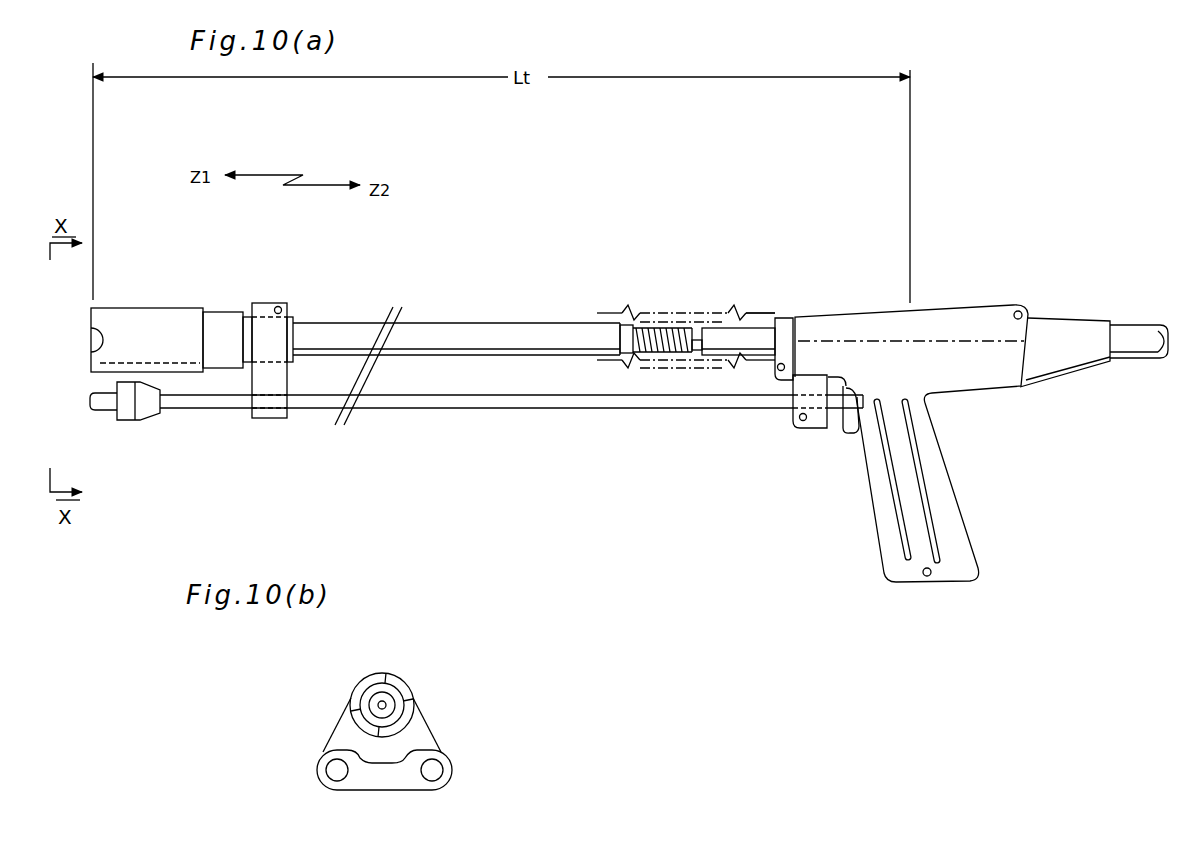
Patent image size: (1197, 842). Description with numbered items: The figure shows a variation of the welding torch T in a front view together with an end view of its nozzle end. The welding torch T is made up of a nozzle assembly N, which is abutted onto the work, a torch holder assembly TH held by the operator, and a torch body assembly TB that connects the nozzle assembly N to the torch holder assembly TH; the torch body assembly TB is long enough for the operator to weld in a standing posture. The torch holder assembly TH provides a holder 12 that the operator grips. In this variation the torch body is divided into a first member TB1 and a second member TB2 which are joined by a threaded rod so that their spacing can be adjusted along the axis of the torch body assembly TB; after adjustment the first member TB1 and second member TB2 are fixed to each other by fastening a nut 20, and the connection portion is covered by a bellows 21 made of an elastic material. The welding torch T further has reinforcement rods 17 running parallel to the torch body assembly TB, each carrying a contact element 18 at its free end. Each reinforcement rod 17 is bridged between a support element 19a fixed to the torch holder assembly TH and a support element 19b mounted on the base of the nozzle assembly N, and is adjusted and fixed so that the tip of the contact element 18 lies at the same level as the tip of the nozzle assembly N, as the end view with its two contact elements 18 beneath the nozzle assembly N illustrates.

In FIG. 10A, the holder 12 is at (940, 507).
In FIG. 10A, the reinforcement rod 17 is at (500, 405).
In FIG. 10A, the contact element 18 is at (105, 411).
In FIG. 10B, the contact element 18 is at (333, 768).
In FIG. 10A, the support element 19a is at (818, 423).
In FIG. 10A, the support element 19b is at (278, 378).
In FIG. 10A, the nut 20 is at (628, 345).
In FIG. 10A, the bellows 21 is at (751, 310).
In FIG. 10A, the nozzle assembly N is at (228, 301).
In FIG. 10B, the nozzle assembly N is at (363, 672).
In FIG. 10A, the torch body assembly TB is at (460, 308).
In FIG. 10A, the first member TB1 is at (566, 338).
In FIG. 10A, the second member TB2 is at (716, 322).
In FIG. 10A, the torch holder assembly TH is at (953, 303).
In FIG. 10A, the welding torch T is at (640, 468).